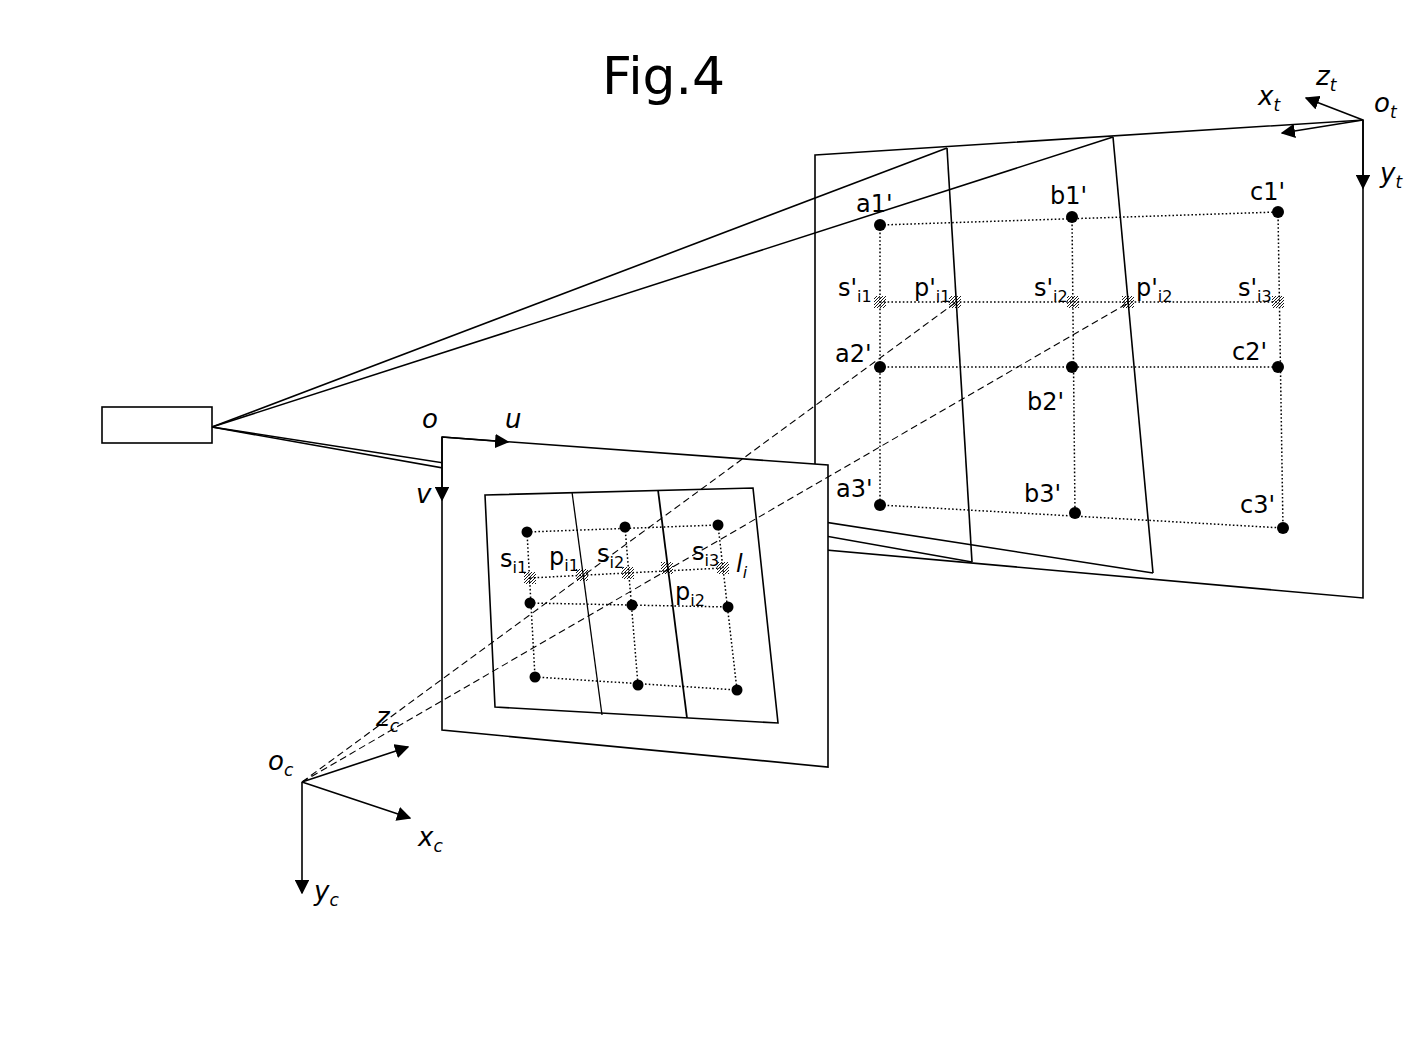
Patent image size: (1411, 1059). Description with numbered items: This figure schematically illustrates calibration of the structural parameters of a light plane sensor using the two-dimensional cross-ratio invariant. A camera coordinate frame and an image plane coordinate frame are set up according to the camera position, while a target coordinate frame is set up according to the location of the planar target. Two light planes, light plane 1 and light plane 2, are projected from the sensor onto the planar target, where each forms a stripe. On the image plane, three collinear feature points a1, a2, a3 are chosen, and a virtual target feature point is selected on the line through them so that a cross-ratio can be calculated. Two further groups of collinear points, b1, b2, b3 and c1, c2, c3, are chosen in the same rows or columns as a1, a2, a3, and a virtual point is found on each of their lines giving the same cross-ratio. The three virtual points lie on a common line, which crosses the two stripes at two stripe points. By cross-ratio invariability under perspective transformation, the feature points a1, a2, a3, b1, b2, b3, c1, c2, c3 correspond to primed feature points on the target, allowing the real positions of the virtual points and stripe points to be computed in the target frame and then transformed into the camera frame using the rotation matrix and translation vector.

The light plane 1 is at (592, 355).
The light plane 2 is at (682, 355).
The feature point a1 is at (515, 520).
The feature point b1 is at (614, 514).
The feature point c1 is at (707, 511).
The feature point a2 is at (516, 610).
The feature point b2 is at (620, 621).
The feature point c2 is at (716, 622).
The feature point a3 is at (520, 674).
The feature point b3 is at (624, 696).
The feature point c3 is at (727, 704).